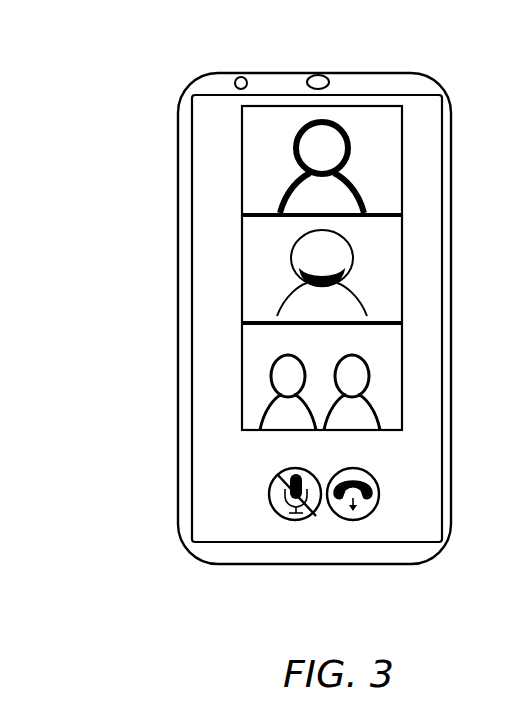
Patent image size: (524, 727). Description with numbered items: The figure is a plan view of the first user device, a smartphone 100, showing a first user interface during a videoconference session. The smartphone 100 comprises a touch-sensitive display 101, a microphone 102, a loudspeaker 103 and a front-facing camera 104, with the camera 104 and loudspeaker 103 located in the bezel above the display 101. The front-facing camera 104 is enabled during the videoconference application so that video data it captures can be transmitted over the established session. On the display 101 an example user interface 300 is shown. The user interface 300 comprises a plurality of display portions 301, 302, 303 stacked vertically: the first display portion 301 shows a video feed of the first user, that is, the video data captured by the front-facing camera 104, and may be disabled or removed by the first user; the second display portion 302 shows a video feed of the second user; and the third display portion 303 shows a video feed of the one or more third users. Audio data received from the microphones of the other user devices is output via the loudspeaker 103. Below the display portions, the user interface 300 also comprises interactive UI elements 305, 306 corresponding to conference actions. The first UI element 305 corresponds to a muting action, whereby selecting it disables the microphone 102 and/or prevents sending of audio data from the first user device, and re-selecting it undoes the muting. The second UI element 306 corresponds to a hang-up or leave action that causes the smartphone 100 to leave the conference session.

The smartphone 100 is at (172, 157).
The touch-sensitive display 101 is at (190, 365).
The microphone 102 is at (516, 123).
The loudspeaker 103 is at (298, 73).
The front-facing camera 104 is at (235, 80).
The user interface 300 is at (245, 524).
The first display portion 301 is at (395, 153).
The second display portion 302 is at (395, 262).
The third display portion 303 is at (395, 383).
The first UI element 305 is at (292, 521).
The second UI element 306 is at (360, 520).